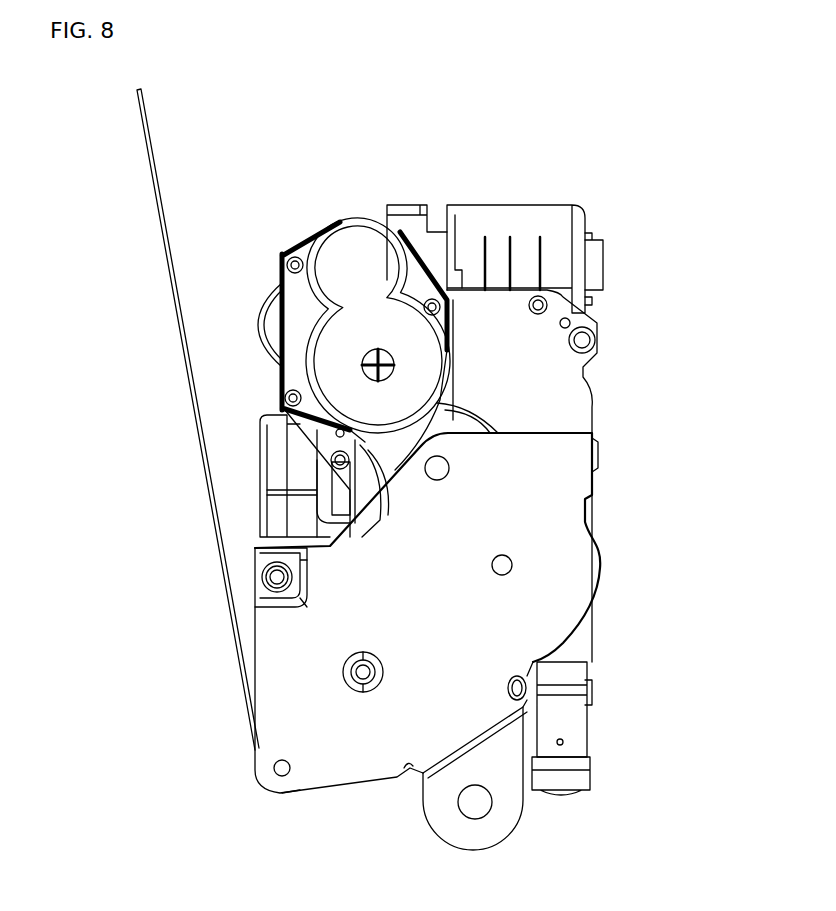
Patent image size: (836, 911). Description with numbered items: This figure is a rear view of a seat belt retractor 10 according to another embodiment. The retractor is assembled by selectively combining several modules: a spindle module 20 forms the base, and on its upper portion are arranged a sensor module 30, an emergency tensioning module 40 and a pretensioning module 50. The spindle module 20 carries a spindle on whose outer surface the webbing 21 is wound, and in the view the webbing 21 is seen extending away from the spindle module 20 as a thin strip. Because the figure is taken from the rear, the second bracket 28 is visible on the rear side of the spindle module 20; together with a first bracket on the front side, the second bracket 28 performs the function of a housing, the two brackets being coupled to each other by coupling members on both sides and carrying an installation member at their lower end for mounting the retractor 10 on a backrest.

The seat belt retractor 10 is at (247, 86).
The spindle module 20 is at (292, 656).
The webbing 21 is at (172, 291).
The second bracket 28 is at (328, 753).
The sensor module 30 is at (247, 487).
The emergency tensioning module 40 is at (610, 399).
The pretensioning module 50 is at (461, 192).